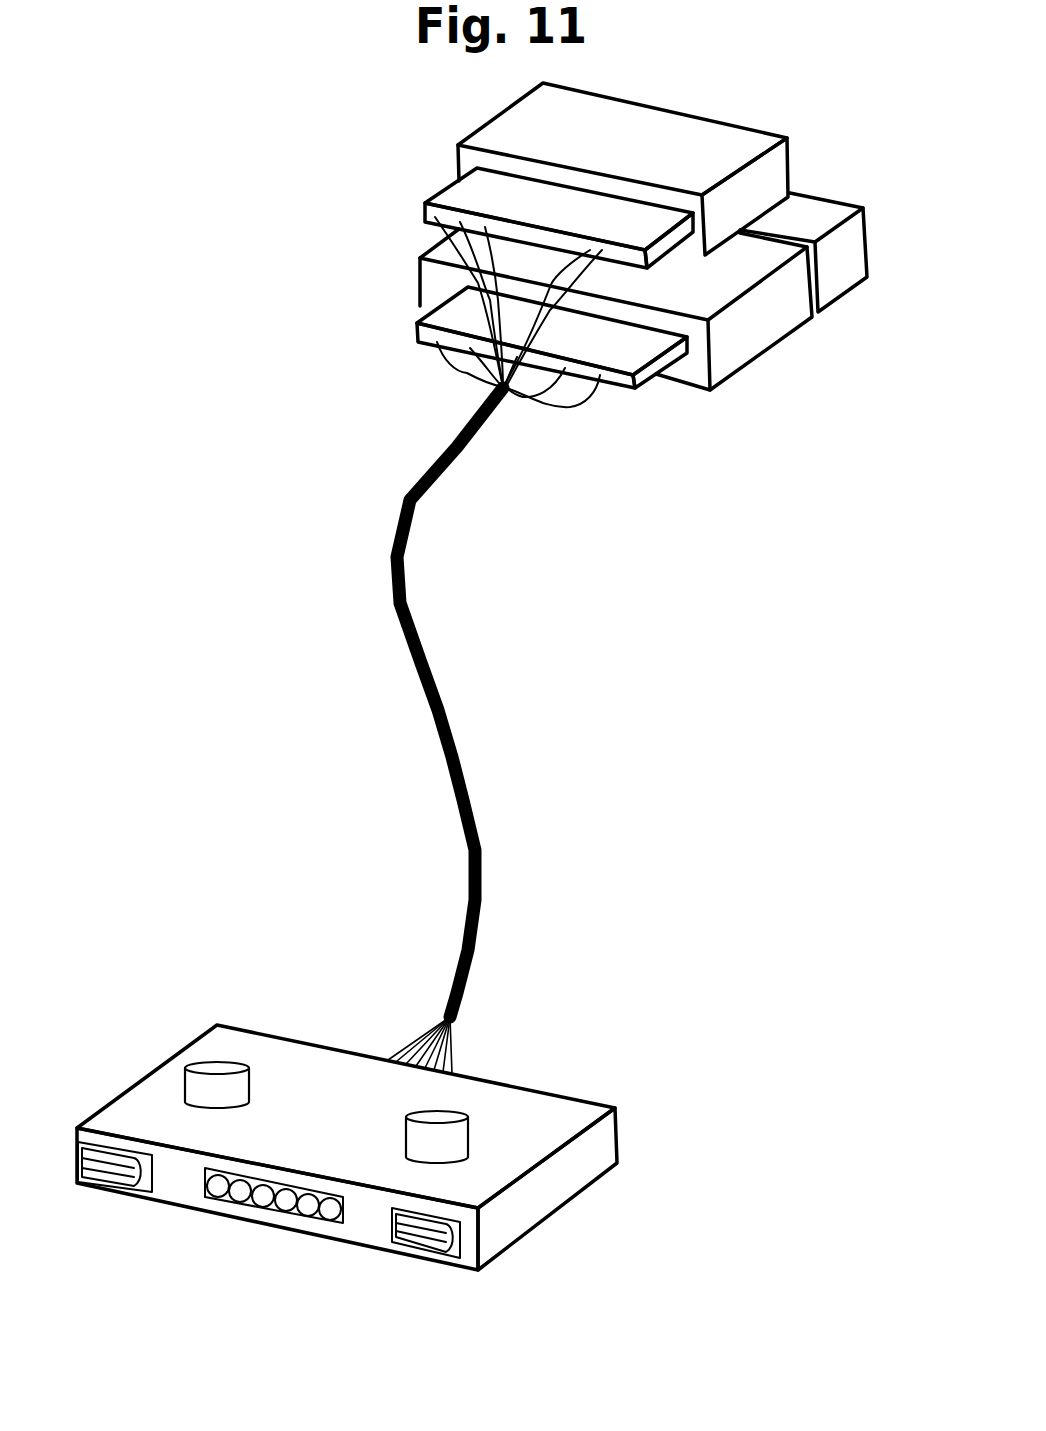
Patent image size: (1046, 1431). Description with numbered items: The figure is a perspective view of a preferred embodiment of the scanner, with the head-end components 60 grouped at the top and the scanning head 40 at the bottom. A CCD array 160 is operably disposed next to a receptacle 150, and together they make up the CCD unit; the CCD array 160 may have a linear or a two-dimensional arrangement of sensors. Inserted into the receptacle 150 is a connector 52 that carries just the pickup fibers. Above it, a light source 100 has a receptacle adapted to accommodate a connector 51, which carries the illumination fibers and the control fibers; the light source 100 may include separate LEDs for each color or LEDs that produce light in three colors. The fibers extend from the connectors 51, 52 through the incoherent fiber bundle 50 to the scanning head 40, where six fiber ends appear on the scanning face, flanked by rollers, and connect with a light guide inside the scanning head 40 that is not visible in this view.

The light source 100 is at (787, 138).
The CCD array 160 is at (868, 277).
The receptacle 150 is at (713, 388).
The connector 51 is at (423, 203).
The connector 52 is at (418, 323).
The sensor head assembly 60 is at (608, 361).
The fiber bundle 50 is at (538, 783).
The scanning head 40 is at (668, 1140).